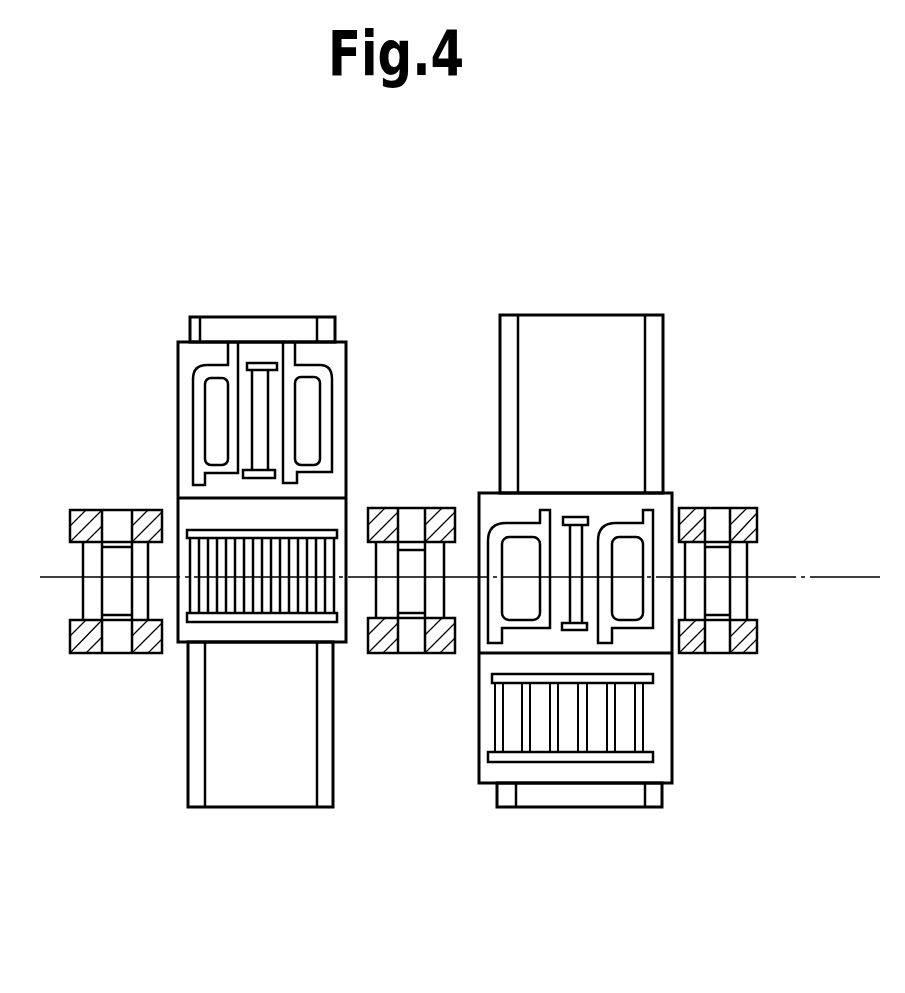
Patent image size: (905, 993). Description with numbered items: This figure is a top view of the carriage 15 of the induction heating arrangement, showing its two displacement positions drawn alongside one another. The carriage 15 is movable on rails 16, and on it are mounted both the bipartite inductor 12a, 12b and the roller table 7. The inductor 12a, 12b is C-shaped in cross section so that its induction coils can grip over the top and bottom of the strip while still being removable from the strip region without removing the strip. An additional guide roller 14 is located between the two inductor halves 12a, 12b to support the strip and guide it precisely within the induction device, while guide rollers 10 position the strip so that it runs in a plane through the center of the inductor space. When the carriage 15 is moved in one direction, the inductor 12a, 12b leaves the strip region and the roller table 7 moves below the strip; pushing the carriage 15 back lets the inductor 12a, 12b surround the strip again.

The roller table 7 is at (280, 605).
The guide rollers 10 is at (118, 548).
The inductor half 12a is at (217, 397).
The inductor half 12b is at (307, 397).
The additional guide roller 14 is at (262, 390).
The carriage 15 is at (330, 482).
The rails 16 is at (197, 738).